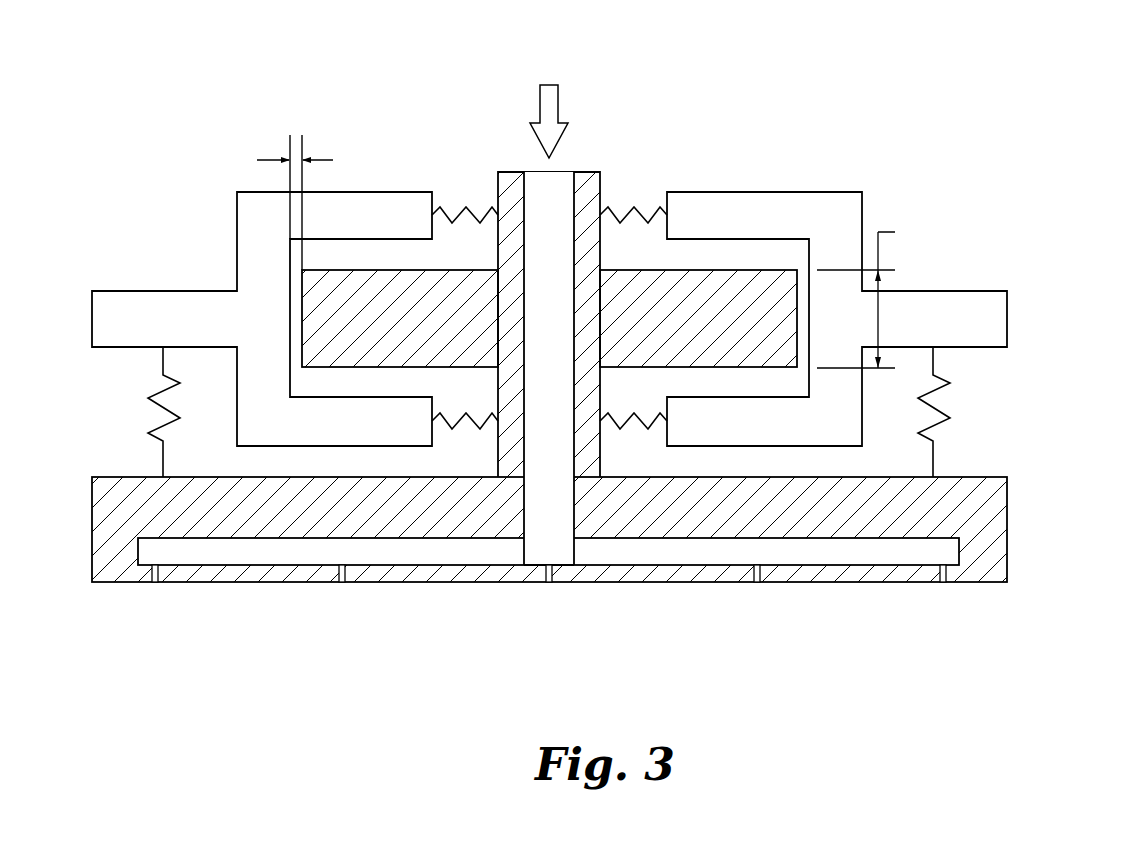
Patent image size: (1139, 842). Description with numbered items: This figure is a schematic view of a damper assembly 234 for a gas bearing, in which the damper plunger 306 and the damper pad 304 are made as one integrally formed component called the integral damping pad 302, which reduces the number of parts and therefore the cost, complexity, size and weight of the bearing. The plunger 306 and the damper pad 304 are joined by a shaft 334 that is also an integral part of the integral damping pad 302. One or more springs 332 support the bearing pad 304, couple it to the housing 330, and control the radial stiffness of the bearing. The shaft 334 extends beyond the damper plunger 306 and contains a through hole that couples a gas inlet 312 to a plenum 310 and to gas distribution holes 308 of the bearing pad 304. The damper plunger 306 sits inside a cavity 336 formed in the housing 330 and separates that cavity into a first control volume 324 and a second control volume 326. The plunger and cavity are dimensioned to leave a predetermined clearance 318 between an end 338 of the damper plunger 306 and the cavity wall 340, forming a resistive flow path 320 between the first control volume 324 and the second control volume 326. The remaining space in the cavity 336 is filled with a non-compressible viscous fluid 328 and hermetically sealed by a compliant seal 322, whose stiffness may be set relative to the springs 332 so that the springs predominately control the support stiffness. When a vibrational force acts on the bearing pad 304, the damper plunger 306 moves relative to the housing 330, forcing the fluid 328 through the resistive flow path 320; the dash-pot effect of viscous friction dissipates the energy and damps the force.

The test fixture assembly 234 is at (193, 83).
The integral damping pad 302 is at (494, 168).
The damper pad 304 is at (995, 542).
The damper plunger 306 is at (775, 282).
The gas distribution holes 308 is at (155, 583).
The plenum 310 is at (148, 554).
The gas inlet 312 is at (550, 104).
The predetermined clearance 318 is at (269, 202).
The resistive flow path 320 is at (882, 294).
The compliant seal 322 is at (650, 205).
The first control volume 324 is at (430, 265).
The second control volume 326 is at (443, 400).
The viscous fluid 328 is at (616, 400).
The housing 330 is at (1007, 322).
The springs 332 is at (935, 405).
The shaft 334 is at (601, 457).
The cavity 336 is at (645, 266).
The end of the damper plunger 338 is at (302, 292).
The cavity wall 340 is at (290, 268).